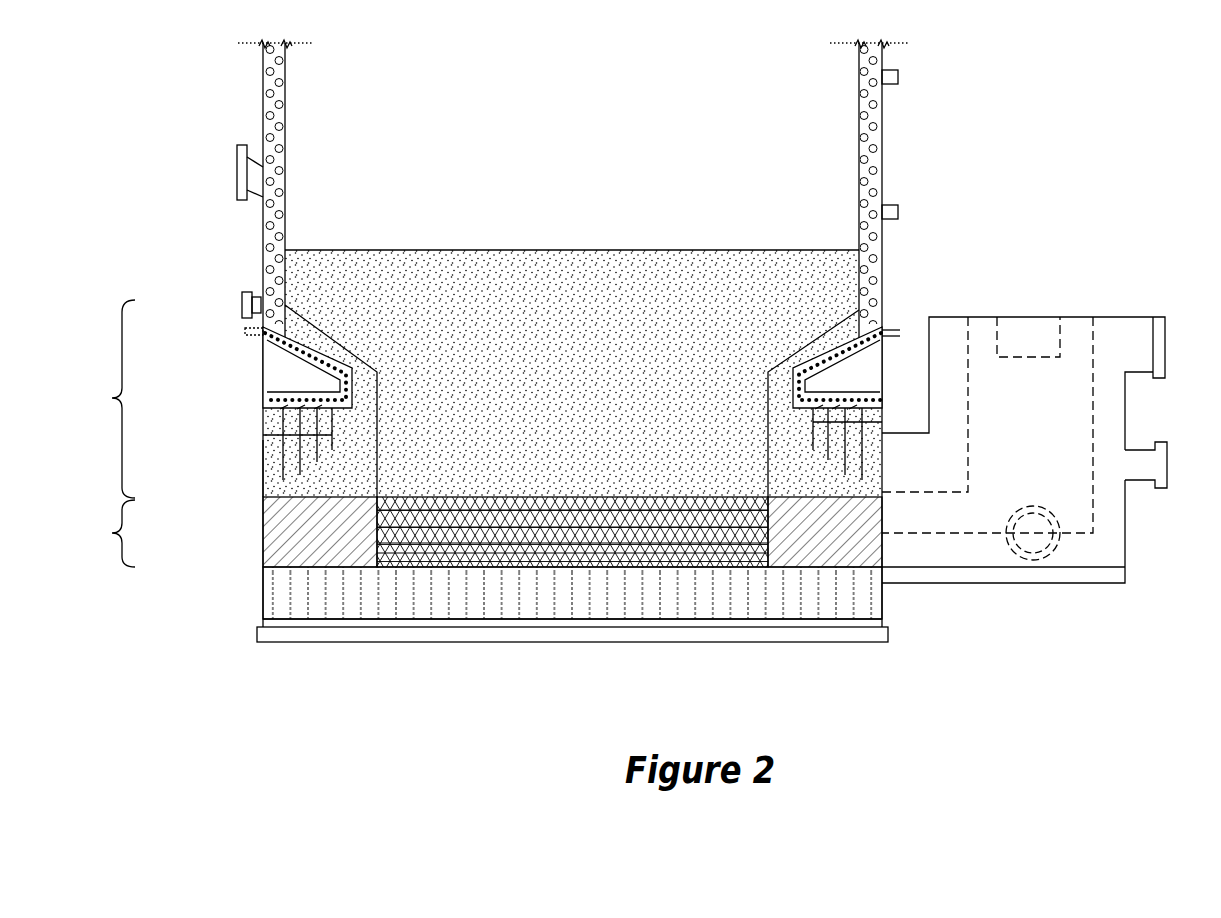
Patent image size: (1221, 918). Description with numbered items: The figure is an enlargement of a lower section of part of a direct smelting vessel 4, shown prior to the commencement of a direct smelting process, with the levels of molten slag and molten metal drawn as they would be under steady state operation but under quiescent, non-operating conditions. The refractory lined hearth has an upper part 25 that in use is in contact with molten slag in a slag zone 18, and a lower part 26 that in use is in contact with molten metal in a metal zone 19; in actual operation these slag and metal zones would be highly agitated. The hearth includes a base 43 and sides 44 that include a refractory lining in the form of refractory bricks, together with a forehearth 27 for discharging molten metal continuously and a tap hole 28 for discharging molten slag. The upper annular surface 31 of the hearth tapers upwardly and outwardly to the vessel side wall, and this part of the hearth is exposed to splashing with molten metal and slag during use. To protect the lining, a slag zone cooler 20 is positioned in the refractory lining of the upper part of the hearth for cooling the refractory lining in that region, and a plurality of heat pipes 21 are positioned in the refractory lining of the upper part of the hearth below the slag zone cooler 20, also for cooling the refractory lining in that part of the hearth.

The direct smelting vessel 4 is at (676, 78).
The slag zone 18 is at (562, 377).
The metal zone 19 is at (562, 545).
The slag zone cooler 20 is at (276, 370).
The heat pipes 21 is at (300, 443).
The upper part of the hearth 25 is at (103, 399).
The lower part of the hearth 26 is at (477, 532).
The forehearth 27 is at (1036, 418).
The tap hole 28 is at (242, 300).
The upper annular surface of the hearth 31 is at (330, 333).
The base of the hearth 43 is at (341, 600).
The sides of the hearth 44 is at (253, 479).